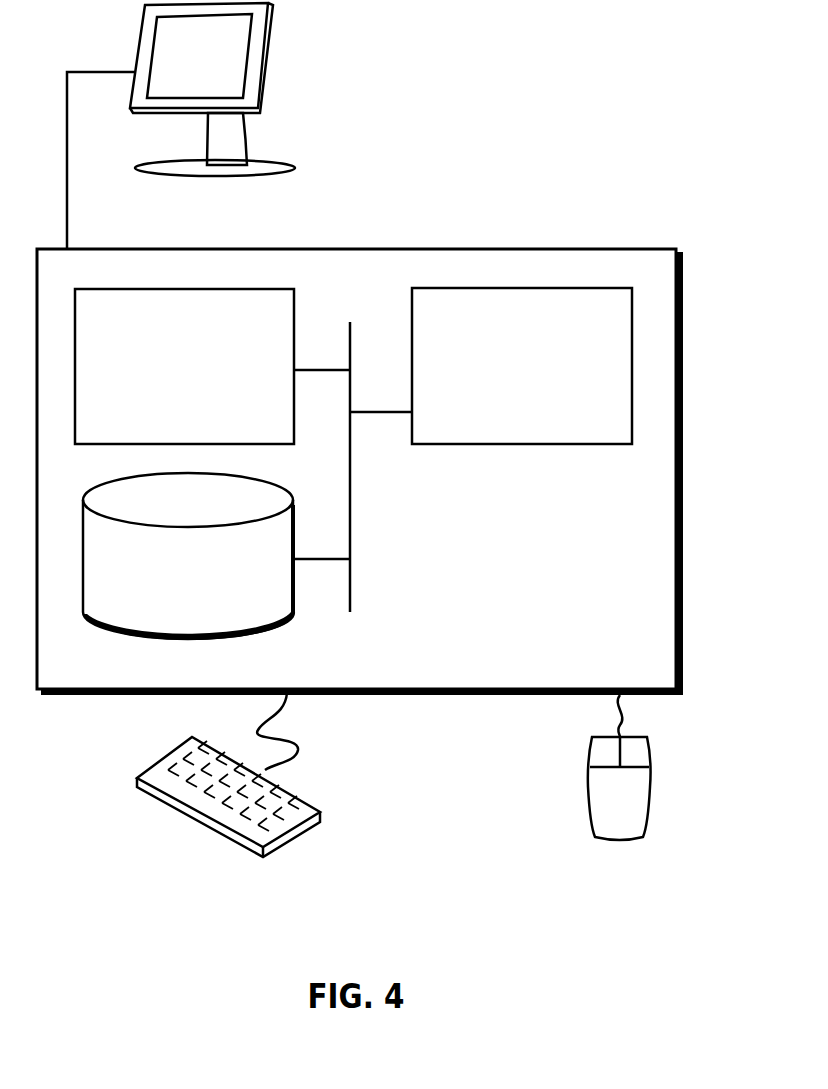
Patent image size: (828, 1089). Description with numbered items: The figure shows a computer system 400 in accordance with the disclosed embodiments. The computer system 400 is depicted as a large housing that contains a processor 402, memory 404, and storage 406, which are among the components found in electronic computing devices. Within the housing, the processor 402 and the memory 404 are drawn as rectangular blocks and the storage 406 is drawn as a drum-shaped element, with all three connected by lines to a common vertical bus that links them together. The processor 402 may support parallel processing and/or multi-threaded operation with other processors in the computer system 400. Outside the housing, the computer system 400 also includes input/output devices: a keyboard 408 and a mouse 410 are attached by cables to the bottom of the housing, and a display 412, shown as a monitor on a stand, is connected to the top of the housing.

The computer system 400 is at (402, 227).
The processor 402 is at (504, 379).
The memory 404 is at (164, 377).
The storage 406 is at (171, 583).
The keyboard 408 is at (157, 793).
The mouse 410 is at (599, 807).
The display 412 is at (181, 126).